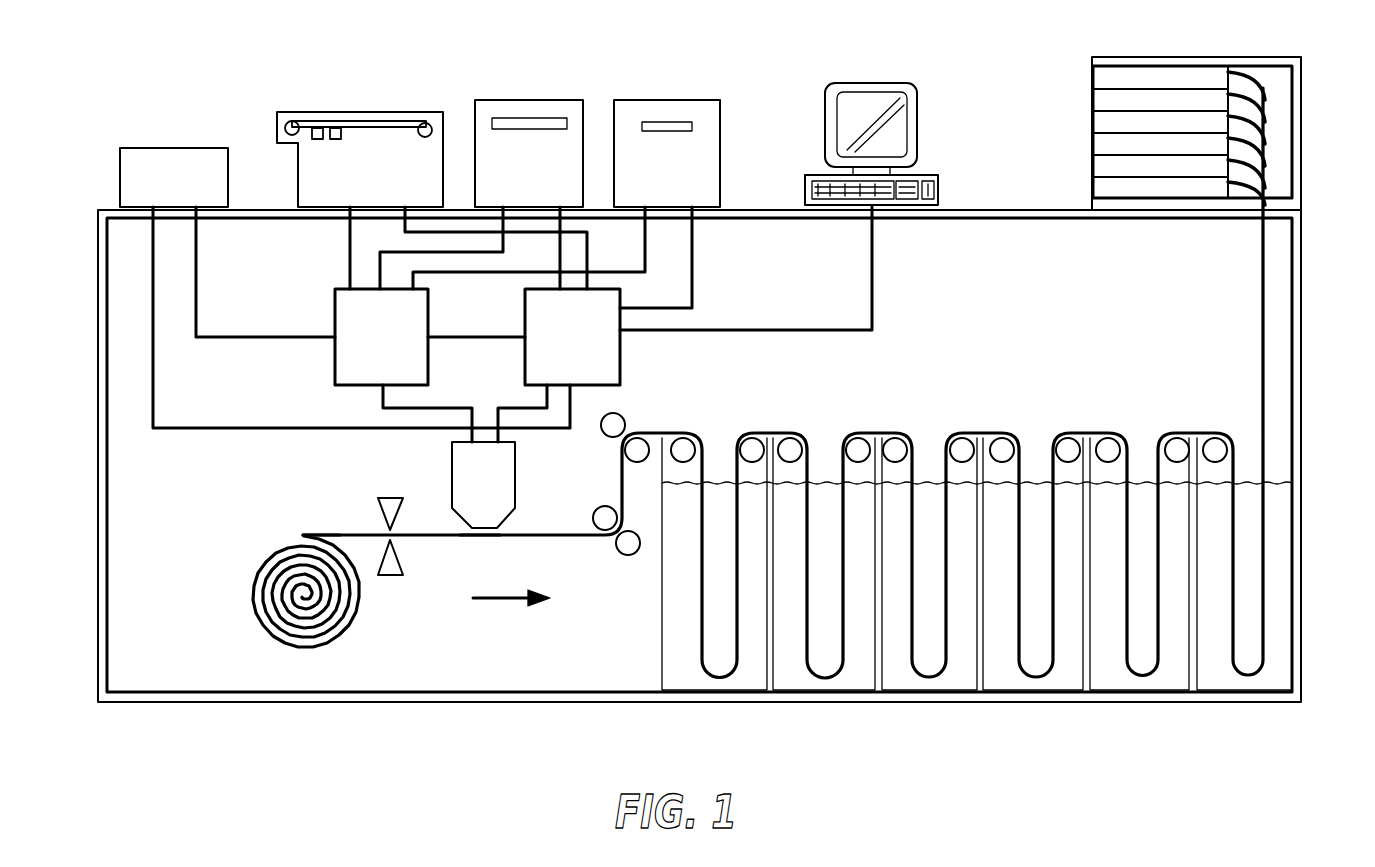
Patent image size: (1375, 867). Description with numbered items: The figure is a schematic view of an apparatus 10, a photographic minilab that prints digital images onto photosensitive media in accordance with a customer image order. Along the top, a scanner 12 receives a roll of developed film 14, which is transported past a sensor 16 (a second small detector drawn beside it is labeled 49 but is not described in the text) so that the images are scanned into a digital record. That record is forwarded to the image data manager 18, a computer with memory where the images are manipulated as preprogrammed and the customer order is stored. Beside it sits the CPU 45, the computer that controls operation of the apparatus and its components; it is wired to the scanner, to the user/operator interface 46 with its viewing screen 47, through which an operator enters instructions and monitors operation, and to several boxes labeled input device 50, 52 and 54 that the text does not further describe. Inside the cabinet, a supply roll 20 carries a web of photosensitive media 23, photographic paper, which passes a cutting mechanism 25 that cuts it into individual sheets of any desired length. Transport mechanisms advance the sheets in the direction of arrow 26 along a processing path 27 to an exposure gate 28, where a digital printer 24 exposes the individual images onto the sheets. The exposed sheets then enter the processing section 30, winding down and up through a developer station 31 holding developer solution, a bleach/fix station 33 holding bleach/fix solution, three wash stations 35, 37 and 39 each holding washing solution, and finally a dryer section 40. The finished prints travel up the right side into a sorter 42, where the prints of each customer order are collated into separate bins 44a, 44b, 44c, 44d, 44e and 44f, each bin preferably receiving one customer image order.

The apparatus 10 is at (88, 504).
The scanner 12 is at (416, 108).
The roll of developed film 14 is at (292, 120).
The sensor 16 is at (318, 127).
The scanner detector 49 is at (336, 127).
The image data manager 18 is at (334, 312).
The supply roll 20 is at (258, 567).
The web of photosensitive media 23 is at (313, 534).
The digital printer 24 is at (516, 455).
The cutting mechanism 25 is at (390, 497).
The arrow 26 is at (497, 600).
The processing path 27 is at (553, 534).
The exposure gate 28 is at (482, 540).
The processing section 30 is at (984, 525).
The developer station 31 is at (735, 684).
The bleach/fix station 33 is at (845, 684).
The wash station 35 is at (952, 684).
The wash station 37 is at (1060, 684).
The wash station 39 is at (1167, 684).
The dryer section 40 is at (1277, 684).
The sorter 42 is at (1305, 134).
The bin 44a is at (1093, 78).
The bin 44b is at (1093, 102).
The bin 44c is at (1093, 127).
The bin 44d is at (1093, 147).
The bin 44e is at (1093, 163).
The bin 44f is at (1093, 185).
The CPU 45 is at (621, 365).
The user/operator interface 46 is at (937, 177).
The viewing screen 47 is at (866, 82).
The input device 50 is at (522, 99).
The input device 52 is at (655, 99).
The input device 54 is at (172, 147).